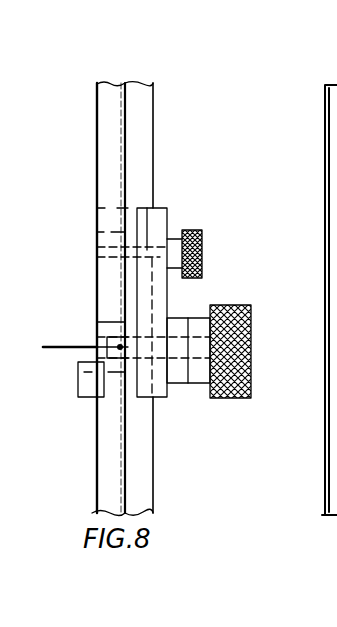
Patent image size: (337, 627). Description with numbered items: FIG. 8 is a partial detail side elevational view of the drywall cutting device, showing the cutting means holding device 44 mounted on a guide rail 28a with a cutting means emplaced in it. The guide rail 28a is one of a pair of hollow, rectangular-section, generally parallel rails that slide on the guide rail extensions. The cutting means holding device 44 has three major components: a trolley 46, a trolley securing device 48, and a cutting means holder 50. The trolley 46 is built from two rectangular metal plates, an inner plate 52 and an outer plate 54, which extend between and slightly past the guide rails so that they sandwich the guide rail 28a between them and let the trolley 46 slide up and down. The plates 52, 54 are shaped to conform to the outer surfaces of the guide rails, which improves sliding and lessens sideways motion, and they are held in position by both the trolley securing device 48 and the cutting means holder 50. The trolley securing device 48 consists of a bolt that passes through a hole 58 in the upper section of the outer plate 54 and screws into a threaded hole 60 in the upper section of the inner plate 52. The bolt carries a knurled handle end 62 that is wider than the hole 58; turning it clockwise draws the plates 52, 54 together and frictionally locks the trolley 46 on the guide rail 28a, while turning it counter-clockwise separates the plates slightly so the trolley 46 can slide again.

The guide rail 28a is at (145, 108).
The cutting means holding device 44 is at (222, 210).
The trolley 46 is at (168, 208).
The trolley securing device 48 is at (202, 258).
The cutting means holder 50 is at (175, 383).
The inner plate 52 is at (97, 232).
The outer plate 54 is at (163, 290).
The hole 58 is at (147, 248).
The threaded hole 60 is at (113, 260).
The handle end 62 is at (202, 240).